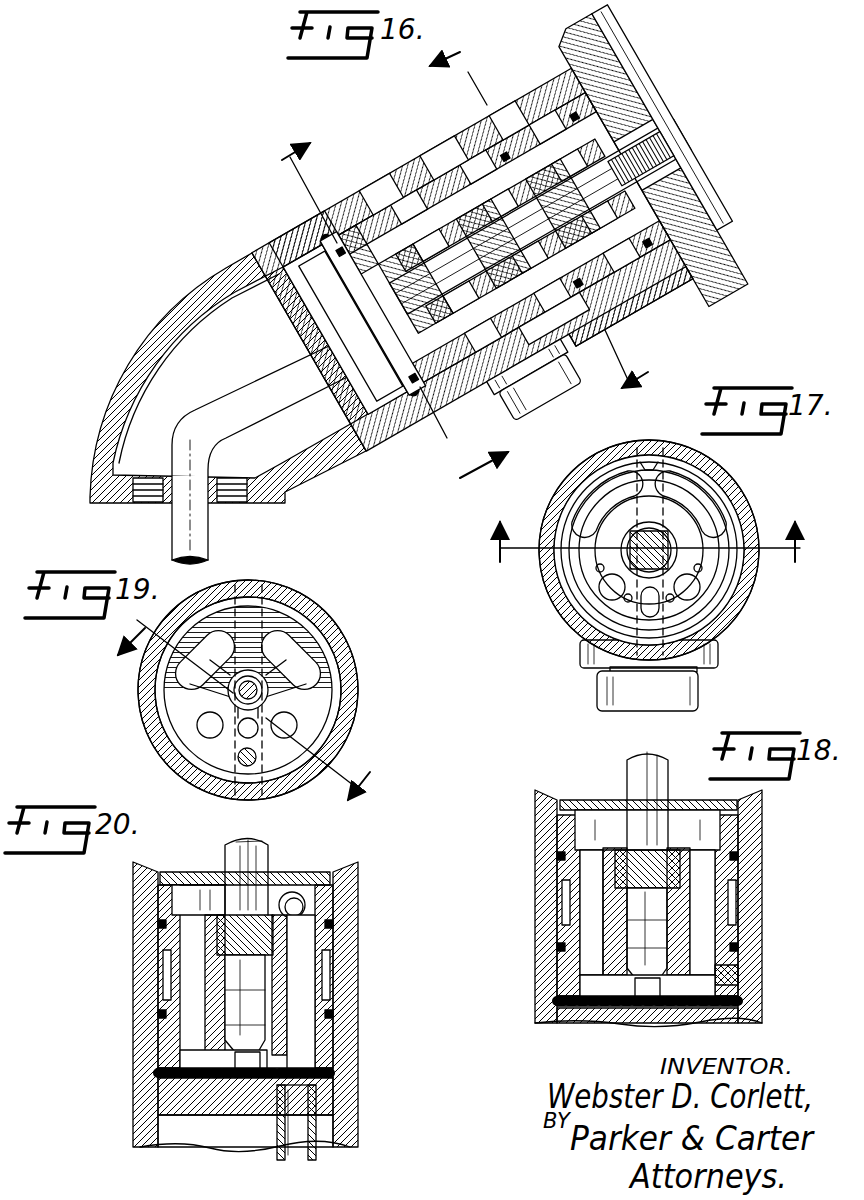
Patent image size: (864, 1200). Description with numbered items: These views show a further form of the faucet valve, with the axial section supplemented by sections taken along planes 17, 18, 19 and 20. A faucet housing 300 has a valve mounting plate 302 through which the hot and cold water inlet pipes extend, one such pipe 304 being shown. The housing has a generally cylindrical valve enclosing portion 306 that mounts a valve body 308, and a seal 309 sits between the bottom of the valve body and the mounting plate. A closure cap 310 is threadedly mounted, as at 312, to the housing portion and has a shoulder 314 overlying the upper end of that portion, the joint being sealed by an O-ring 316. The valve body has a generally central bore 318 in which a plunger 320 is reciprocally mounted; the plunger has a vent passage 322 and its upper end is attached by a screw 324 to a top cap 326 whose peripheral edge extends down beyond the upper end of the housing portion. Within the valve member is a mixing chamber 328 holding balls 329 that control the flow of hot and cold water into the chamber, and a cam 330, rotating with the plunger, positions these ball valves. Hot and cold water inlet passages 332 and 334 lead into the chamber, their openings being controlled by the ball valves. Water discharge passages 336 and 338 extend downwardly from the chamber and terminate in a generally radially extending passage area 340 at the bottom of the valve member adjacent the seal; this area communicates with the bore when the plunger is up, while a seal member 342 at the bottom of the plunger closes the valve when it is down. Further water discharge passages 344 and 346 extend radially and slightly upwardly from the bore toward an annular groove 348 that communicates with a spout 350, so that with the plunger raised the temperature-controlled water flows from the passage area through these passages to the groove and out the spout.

In FIG. 16, the section plane 17— 17 is at (556, 208).
In FIG. 17, the section plane 18— 18 is at (649, 562).
In FIG. 16, the section plane 19— 19 is at (373, 321).
In FIG. 19, the section plane 20— 20 is at (230, 720).
In FIG. 16, the faucet housing 300 is at (318, 470).
In FIG. 16, the valve mounting plate 302 is at (380, 320).
In FIG. 20, the valve mounting plate 302 is at (272, 1120).
In FIG. 18, the valve mounting plate 302 is at (640, 1022).
In FIG. 16, the water inlet pipe 304 is at (218, 430).
In FIG. 20, the water inlet pipe 304 is at (312, 1165).
In FIG. 16, the valve enclosing portion 306 is at (270, 243).
In FIG. 17, the valve enclosing portion 306 is at (735, 625).
In FIG. 19, the valve enclosing portion 306 is at (300, 615).
In FIG. 20, the valve enclosing portion 306 is at (352, 1120).
In FIG. 18, the valve enclosing portion 306 is at (748, 992).
In FIG. 16, the valve body 308 is at (337, 225).
In FIG. 17, the valve body 308 is at (572, 585).
In FIG. 19, the valve body 308 is at (280, 608).
In FIG. 18, the valve body 308 is at (735, 970).
In FIG. 16, the seal 309 is at (322, 240).
In FIG. 20, the seal 309 is at (340, 1075).
In FIG. 18, the seal 309 is at (572, 1012).
In FIG. 16, the closure cap 310 is at (506, 118).
In FIG. 16, the threaded mounting 312 is at (472, 122).
In FIG. 16, the shoulder 314 is at (660, 295).
In FIG. 16, the O-ring 316 is at (546, 122).
In FIG. 16, the central bore 318 is at (445, 185).
In FIG. 20, the central bore 318 is at (230, 975).
In FIG. 18, the central bore 318 is at (680, 860).
In FIG. 16, the plunger 320 is at (660, 205).
In FIG. 17, the plunger 320 is at (668, 540).
In FIG. 19, the plunger 320 is at (248, 690).
In FIG. 20, the plunger 320 is at (262, 865).
In FIG. 18, the plunger 320 is at (640, 768).
In FIG. 16, the vent passage 322 is at (632, 145).
In FIG. 16, the screw 324 is at (652, 180).
In FIG. 16, the top cap 326 is at (742, 280).
In FIG. 16, the mixing chamber 328 is at (490, 165).
In FIG. 20, the mixing chamber 328 is at (195, 898).
In FIG. 18, the mixing chamber 328 is at (715, 830).
In FIG. 20, the ball 329 is at (300, 905).
In FIG. 16, the cam 330 is at (560, 330).
In FIG. 20, the cam 330 is at (205, 850).
In FIG. 17, the hot water inlet passage 332 is at (605, 592).
In FIG. 19, the hot water inlet passage 332 is at (290, 725).
In FIG. 20, the hot water inlet passage 332 is at (300, 1015).
In FIG. 17, the cold water inlet passage 334 is at (695, 592).
In FIG. 19, the cold water inlet passage 334 is at (208, 732).
In FIG. 17, the water discharge passage 336 is at (598, 525).
In FIG. 19, the water discharge passage 336 is at (300, 655).
In FIG. 18, the water discharge passage 336 is at (592, 907).
In FIG. 16, the water discharge passage 338 is at (410, 235).
In FIG. 17, the water discharge passage 338 is at (705, 525).
In FIG. 19, the water discharge passage 338 is at (196, 690).
In FIG. 20, the water discharge passage 338 is at (190, 1005).
In FIG. 18, the water discharge passage 338 is at (705, 905).
In FIG. 16, the passage area 340 is at (392, 268).
In FIG. 19, the passage area 340 is at (300, 682).
In FIG. 20, the passage area 340 is at (195, 1058).
In FIG. 18, the passage area 340 is at (665, 990).
In FIG. 16, the seal member 342 is at (405, 285).
In FIG. 20, the seal member 342 is at (275, 1040).
In FIG. 18, the seal member 342 is at (640, 965).
In FIG. 17, the water discharge passage 344 is at (657, 452).
In FIG. 19, the water discharge passage 344 is at (272, 580).
In FIG. 16, the water discharge passage 346 is at (460, 385).
In FIG. 17, the water discharge passage 346 is at (592, 668).
In FIG. 19, the water discharge passage 346 is at (232, 800).
In FIG. 16, the annular groove 348 is at (415, 200).
In FIG. 20, the annular groove 348 is at (340, 978).
In FIG. 18, the annular groove 348 is at (740, 912).
In FIG. 16, the spout 350 is at (535, 400).
In FIG. 17, the spout 350 is at (698, 702).